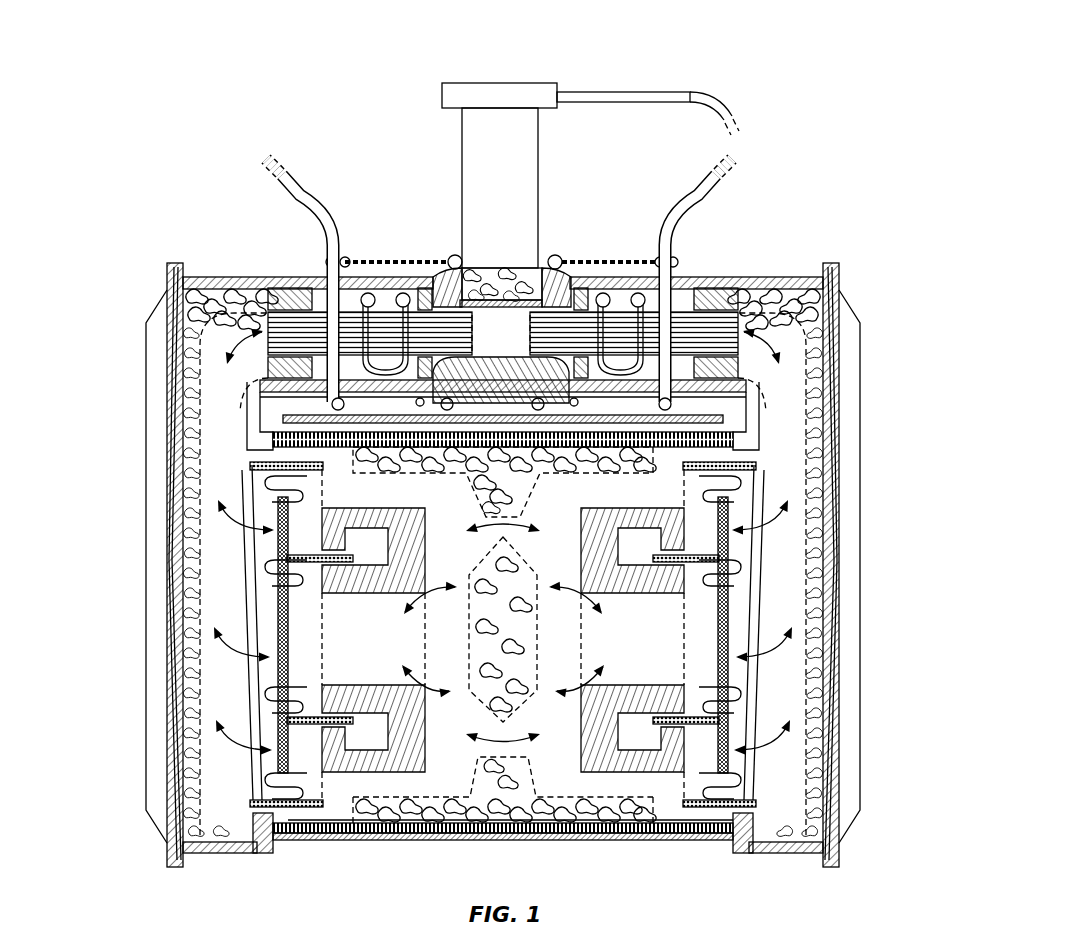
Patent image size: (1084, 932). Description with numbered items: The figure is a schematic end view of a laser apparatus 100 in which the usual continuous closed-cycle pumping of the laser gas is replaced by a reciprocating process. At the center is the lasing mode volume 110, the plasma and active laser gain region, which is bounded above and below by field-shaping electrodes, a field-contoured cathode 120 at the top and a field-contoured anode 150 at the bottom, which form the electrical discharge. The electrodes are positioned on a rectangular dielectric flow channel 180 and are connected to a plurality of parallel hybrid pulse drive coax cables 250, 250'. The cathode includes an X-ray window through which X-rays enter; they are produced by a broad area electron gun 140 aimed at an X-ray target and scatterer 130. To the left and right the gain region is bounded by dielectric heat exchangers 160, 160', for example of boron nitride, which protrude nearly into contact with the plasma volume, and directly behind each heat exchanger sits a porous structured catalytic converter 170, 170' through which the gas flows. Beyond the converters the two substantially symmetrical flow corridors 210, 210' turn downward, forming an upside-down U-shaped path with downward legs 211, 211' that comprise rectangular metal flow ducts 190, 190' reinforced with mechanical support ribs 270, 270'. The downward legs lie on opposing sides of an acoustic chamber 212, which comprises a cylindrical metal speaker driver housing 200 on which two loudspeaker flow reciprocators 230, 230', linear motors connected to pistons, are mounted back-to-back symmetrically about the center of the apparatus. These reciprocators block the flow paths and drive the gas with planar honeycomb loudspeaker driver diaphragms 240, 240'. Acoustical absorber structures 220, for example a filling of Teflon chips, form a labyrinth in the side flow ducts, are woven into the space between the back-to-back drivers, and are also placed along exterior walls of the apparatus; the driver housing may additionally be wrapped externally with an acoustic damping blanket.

The laser apparatus 100 is at (770, 79).
The lasing mode volume 110 is at (451, 256).
The field-contoured cathode 120 is at (482, 332).
The X-ray target and scatterer 130 is at (528, 262).
The broad area electron gun 140 is at (542, 159).
The field-contoured anode 150 is at (523, 348).
The dielectric heat exchanger 160 is at (381, 285).
The dielectric heat exchanger 160' is at (600, 285).
The porous structured catalytic converter 170 is at (260, 302).
The porous structured catalytic converter 170' is at (749, 303).
The rectangular dielectric flow channel 180 is at (688, 274).
The rectangular metal flow duct 190 is at (192, 634).
The rectangular metal flow duct 190' is at (812, 634).
The cylindrical metal speaker driver housing 200 is at (430, 841).
The flow corridor 210 is at (177, 574).
The flow corridor 210' is at (832, 574).
The downward leg 211 is at (150, 563).
The downward leg 211' is at (863, 563).
The acoustic chamber 212 is at (450, 773).
The acoustical absorber structures 220 is at (193, 487).
The loudspeaker flow reciprocator 230 is at (356, 689).
The loudspeaker flow reciprocator 230' is at (650, 689).
The planar honeycomb loudspeaker driver diaphragm 240 is at (174, 635).
The planar honeycomb loudspeaker driver diaphragm 240' is at (832, 635).
The hybrid pulse drive coax cable 250 is at (333, 275).
The hybrid pulse drive coax cable 250' is at (668, 277).
The mechanical support rib 270 is at (167, 565).
The mechanical support rib 270' is at (842, 565).